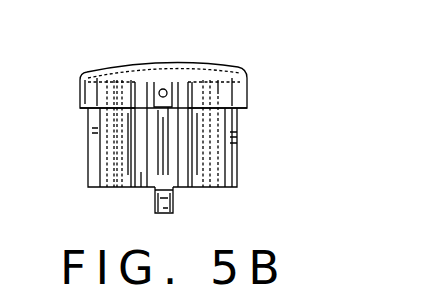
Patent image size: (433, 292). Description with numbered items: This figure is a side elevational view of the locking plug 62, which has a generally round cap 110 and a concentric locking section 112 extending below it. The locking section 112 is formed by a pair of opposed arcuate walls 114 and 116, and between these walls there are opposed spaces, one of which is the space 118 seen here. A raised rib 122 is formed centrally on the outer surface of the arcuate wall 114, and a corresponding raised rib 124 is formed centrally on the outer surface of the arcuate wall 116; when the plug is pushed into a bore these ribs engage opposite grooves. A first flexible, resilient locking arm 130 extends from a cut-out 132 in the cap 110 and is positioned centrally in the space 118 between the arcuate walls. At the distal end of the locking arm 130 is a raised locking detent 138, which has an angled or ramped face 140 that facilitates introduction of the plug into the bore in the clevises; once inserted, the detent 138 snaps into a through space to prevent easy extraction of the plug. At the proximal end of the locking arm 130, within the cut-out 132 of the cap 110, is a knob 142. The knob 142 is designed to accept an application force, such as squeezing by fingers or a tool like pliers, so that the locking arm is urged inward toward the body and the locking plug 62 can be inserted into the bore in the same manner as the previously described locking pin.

The locking plug 62 is at (240, 60).
The cap 110 is at (90, 83).
The locking section 112 is at (250, 125).
The arcuate wall 114 is at (103, 173).
The arcuate wall 116 is at (212, 172).
The space 118 is at (141, 173).
The raised rib 122 is at (92, 142).
The raised rib 124 is at (233, 165).
The first flexible, resilient locking arm 130 is at (165, 140).
The cut-out 132 is at (188, 90).
The raised locking detent 138 is at (172, 192).
The angled or ramped face 140 is at (164, 210).
The knob 142 is at (163, 88).